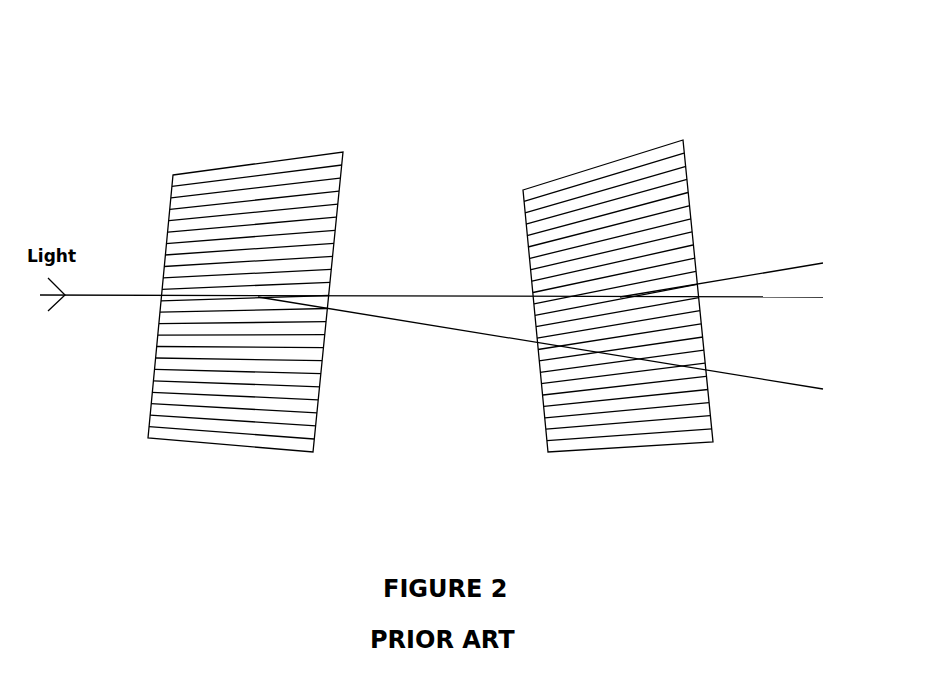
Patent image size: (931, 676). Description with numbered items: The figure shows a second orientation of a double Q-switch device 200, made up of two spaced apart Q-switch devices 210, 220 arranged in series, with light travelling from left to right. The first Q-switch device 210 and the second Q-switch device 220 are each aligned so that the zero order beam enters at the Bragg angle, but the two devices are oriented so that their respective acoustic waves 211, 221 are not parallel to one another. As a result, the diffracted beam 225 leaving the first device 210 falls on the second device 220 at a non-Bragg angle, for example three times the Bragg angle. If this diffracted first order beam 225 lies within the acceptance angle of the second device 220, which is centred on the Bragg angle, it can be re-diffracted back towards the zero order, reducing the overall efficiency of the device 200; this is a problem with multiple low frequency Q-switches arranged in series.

The double Q-switch device 200 is at (652, 527).
The first Q-switch device 210 is at (276, 311).
The acoustic wave of first device 211 is at (273, 180).
The second Q-switch device 220 is at (644, 311).
The acoustic wave of second device 221 is at (630, 180).
The diffracted beam 225 is at (420, 323).